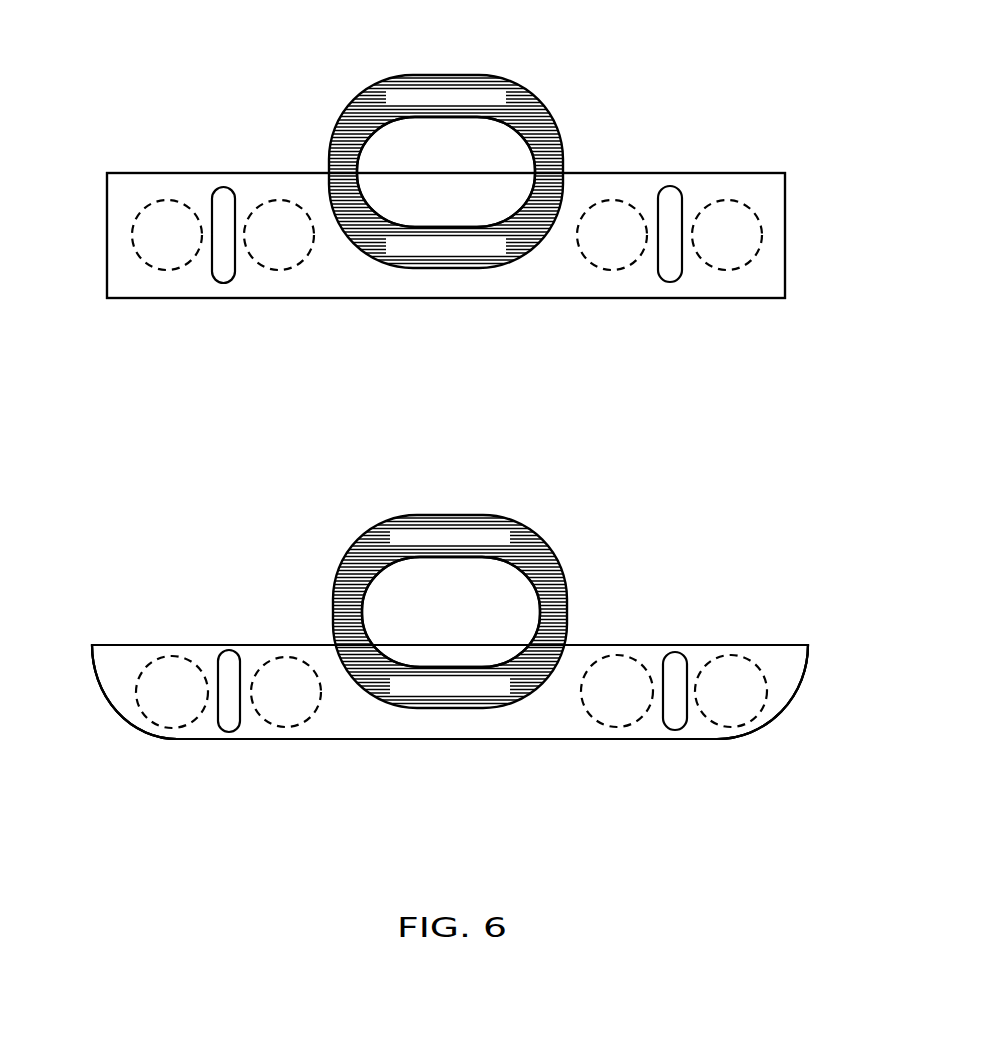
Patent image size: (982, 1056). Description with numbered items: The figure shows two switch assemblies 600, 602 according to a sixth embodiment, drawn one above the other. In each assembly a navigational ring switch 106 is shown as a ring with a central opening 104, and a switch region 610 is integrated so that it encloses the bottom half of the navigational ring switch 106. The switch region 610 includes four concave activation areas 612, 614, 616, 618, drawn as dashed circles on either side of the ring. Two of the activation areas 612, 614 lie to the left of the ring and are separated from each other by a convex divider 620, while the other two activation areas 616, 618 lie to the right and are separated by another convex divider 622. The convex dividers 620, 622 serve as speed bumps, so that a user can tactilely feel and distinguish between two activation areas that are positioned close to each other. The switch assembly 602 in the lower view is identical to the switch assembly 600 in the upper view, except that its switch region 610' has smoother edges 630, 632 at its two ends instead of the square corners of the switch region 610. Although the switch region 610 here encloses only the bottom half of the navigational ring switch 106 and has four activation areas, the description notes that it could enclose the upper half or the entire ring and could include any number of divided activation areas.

The opening of the ring 104 is at (457, 205).
The navigational ring switch 106 is at (441, 100).
The switch assembly 600 is at (753, 73).
The switch assembly 602 is at (758, 516).
The switch region 610 is at (446, 265).
The switch region 610' is at (450, 726).
The activation area 612 is at (155, 234).
The activation area 614 is at (277, 222).
The activation area 616 is at (610, 222).
The activation area 618 is at (735, 228).
The convex divider 620 is at (222, 270).
The convex divider 622 is at (668, 268).
The smoother edge 630 is at (135, 738).
The smoother edge 632 is at (768, 738).